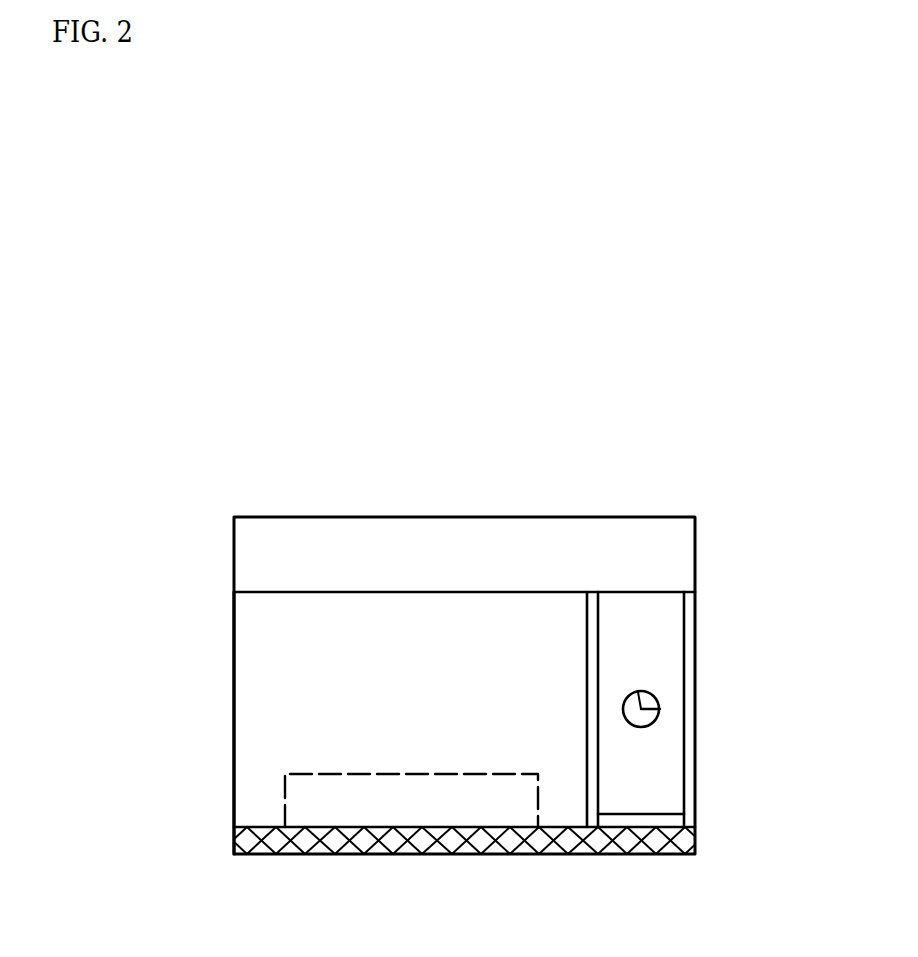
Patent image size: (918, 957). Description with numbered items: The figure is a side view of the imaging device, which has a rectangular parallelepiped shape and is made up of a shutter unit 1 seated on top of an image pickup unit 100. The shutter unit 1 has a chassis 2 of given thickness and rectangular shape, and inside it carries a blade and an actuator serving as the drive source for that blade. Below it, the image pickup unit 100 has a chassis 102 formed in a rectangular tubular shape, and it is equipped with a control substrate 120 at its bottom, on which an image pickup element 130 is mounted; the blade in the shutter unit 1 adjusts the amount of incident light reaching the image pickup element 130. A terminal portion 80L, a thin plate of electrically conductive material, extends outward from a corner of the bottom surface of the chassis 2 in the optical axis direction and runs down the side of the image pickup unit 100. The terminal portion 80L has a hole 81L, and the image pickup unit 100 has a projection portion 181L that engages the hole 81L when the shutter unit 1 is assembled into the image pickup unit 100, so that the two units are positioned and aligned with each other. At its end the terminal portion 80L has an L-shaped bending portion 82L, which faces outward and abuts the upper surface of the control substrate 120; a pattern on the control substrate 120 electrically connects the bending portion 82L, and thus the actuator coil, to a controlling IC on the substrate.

The shutter unit 1 is at (432, 517).
The chassis 2 is at (505, 537).
The image pickup unit 100 is at (232, 632).
The chassis 102 is at (262, 666).
The control substrate 120 is at (493, 840).
The image pickup element 130 is at (300, 799).
The terminal portion 80L is at (657, 618).
The hole 81L is at (655, 695).
The projection portion 181L is at (660, 709).
The bending portion 82L is at (673, 821).